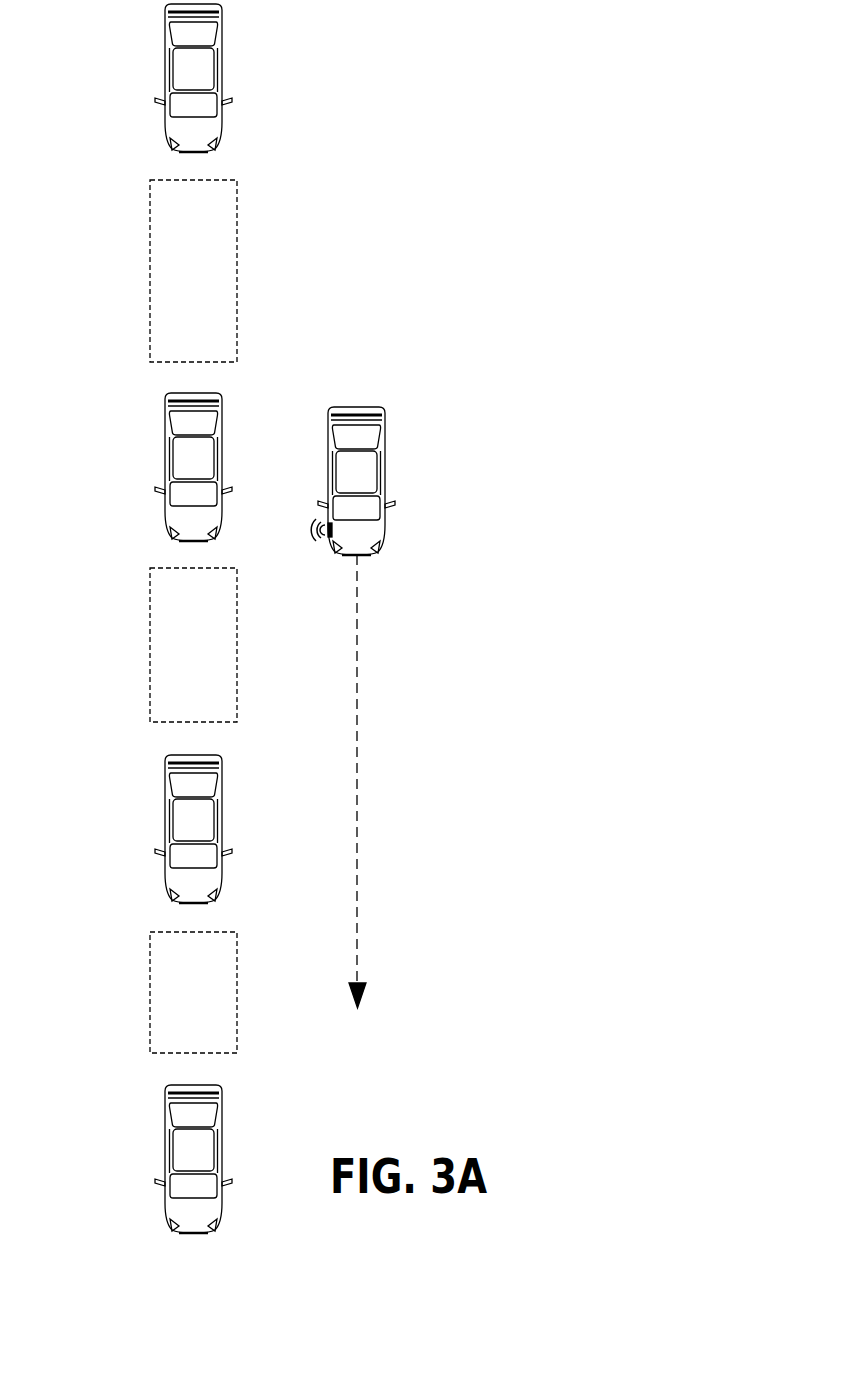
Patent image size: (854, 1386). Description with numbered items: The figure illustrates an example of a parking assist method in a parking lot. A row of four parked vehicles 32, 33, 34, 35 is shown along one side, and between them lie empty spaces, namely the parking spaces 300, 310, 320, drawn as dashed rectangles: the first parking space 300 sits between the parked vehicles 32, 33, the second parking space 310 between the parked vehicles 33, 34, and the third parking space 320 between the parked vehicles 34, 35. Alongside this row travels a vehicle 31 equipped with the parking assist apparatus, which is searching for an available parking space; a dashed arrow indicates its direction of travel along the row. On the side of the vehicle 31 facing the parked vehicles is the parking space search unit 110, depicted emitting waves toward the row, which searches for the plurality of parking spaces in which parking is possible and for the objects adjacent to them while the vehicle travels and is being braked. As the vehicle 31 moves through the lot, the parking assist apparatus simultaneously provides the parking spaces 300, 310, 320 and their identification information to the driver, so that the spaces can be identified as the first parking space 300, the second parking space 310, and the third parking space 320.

The vehicle 31 is at (387, 533).
The parked vehicle 32 is at (163, 88).
The parked vehicle 33 is at (165, 450).
The parked vehicle 34 is at (165, 808).
The parked vehicle 35 is at (165, 1140).
The parking space search unit 110 is at (332, 540).
The first parking space 300 is at (150, 272).
The second parking space 310 is at (150, 647).
The third parking space 320 is at (150, 993).